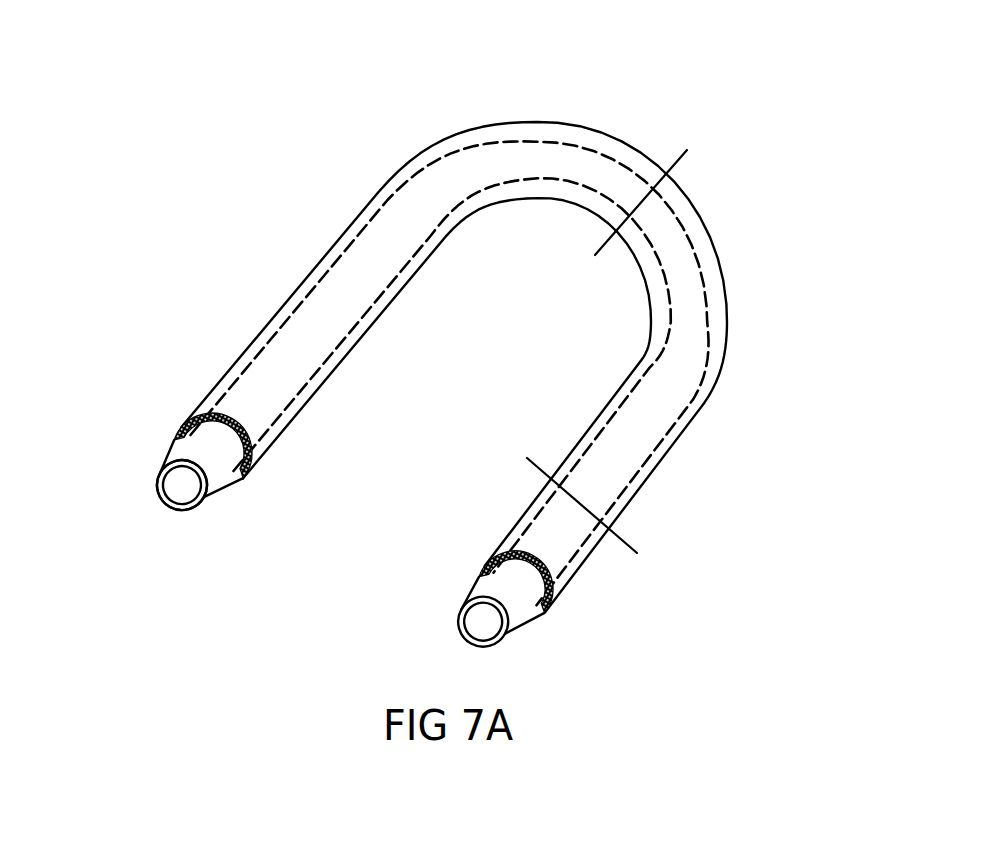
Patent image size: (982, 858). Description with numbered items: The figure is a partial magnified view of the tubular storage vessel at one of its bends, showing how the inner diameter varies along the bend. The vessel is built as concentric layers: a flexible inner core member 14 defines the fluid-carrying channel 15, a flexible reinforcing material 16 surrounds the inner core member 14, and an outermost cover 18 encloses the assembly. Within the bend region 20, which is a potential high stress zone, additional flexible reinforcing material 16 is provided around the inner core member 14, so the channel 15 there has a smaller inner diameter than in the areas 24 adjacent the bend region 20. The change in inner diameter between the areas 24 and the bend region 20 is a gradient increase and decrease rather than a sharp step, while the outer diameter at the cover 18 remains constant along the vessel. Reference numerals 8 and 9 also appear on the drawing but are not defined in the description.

The bend region 20 is at (425, 310).
The area adjacent the bend region 24 is at (206, 185).
The outermost cover 18 is at (233, 366).
The flexible reinforcing material 16 is at (246, 480).
The fluid-carrying channel 15 is at (693, 308).
The flexible inner core member 14 is at (158, 485).
The section line 9- 9 is at (687, 150).
The section line 8- 8 is at (527, 458).